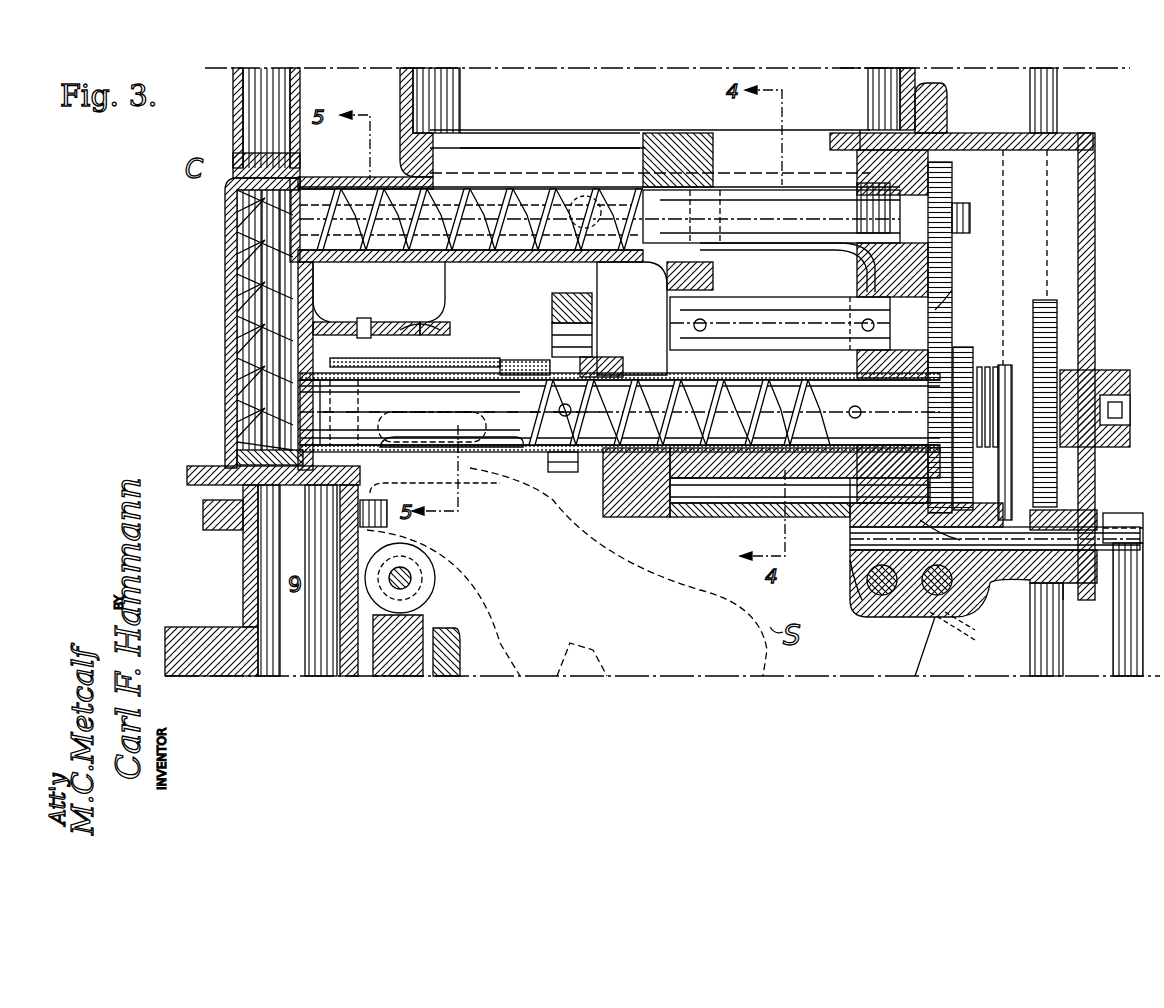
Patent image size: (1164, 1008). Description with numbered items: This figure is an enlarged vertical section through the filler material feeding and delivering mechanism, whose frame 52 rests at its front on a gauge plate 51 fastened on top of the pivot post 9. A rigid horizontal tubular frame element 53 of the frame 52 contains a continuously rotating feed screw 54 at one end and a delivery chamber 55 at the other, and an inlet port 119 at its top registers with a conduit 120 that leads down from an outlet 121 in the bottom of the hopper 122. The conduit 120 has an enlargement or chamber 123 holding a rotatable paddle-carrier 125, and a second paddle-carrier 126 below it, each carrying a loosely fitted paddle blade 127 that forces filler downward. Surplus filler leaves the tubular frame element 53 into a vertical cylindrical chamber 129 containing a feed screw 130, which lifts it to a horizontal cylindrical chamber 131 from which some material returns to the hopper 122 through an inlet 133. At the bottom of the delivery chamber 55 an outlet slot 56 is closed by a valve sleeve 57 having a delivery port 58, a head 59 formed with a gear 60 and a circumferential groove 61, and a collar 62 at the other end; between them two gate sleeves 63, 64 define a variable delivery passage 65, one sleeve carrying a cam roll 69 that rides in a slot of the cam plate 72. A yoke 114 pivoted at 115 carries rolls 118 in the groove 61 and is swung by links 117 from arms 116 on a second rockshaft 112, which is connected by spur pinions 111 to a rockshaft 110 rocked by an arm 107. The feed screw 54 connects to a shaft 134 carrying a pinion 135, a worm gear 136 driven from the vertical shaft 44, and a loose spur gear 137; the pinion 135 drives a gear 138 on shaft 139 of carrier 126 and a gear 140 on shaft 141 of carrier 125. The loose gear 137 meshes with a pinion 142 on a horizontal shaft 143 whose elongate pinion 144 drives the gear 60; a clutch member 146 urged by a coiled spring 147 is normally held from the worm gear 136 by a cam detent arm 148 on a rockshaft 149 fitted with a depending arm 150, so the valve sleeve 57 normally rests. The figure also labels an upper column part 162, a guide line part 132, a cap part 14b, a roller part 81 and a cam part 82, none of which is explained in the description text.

The column 162 is at (270, 98).
The frame 52 is at (225, 212).
The horizontal cylindrical chamber 131 is at (455, 188).
The guide line 132 is at (498, 170).
The inlet 133 is at (552, 148).
The pivot 115 is at (588, 200).
The yoke 114 is at (598, 252).
The enlargement or chamber 123 is at (800, 235).
The paddle blade 127 is at (778, 236).
The paddle-carrier 125 is at (787, 243).
The conduit 120 is at (828, 148).
The outlet 121 is at (868, 122).
The hopper 122 is at (846, 82).
The vertical shaft 44 is at (1057, 110).
The paddle-carrier 126 is at (780, 323).
The pinion 135 is at (860, 320).
The gear 140 is at (952, 178).
The shaft 141 is at (955, 205).
The shaft 139 is at (958, 285).
The spur gear 137 is at (965, 345).
The gear 138 is at (986, 365).
The coiled spring 147 is at (1006, 360).
The clutch member 146 is at (1045, 298).
The worm gear 136 is at (1050, 322).
The cam detent arm 148 is at (1022, 522).
The depending arm 150 is at (1130, 668).
The rockshaft 149 is at (1068, 576).
The horizontal shaft 143 is at (850, 540).
The shaft 134 is at (845, 515).
The pinion 142 is at (965, 530).
The rockshaft 110 is at (950, 588).
The second rockshaft 112 is at (884, 596).
The arm 116 is at (850, 570).
The spur pinions 111 is at (971, 633).
The arm 107 is at (940, 662).
The tubular frame element 53 is at (640, 376).
The inlet port 119 is at (790, 400).
The gear 60 is at (610, 356).
The head 59 is at (588, 355).
The delivery port 58 is at (506, 358).
The gate sleeve 64 is at (460, 372).
The gate sleeve 63 is at (370, 368).
The collar 62 is at (320, 452).
The delivery chamber 55 is at (460, 425).
The outlet slot 56 is at (430, 444).
The valve sleeve 57 is at (462, 450).
The delivery passage 65 is at (408, 460).
The circumferential groove 61 is at (560, 458).
The rolls 118 is at (553, 503).
The elongate pinion 144 is at (640, 518).
The link 117 is at (705, 518).
The feed screw 54 is at (748, 505).
The feed screw 130 is at (245, 315).
The vertical cylindrical chamber 129 is at (245, 342).
The cam roll 69 is at (376, 318).
The cam plate 72 is at (418, 320).
The gauge plate 51 is at (200, 465).
The cap 14b is at (226, 528).
The pivot post 9 is at (308, 580).
The roller 81 is at (432, 578).
The cam 82 is at (425, 628).